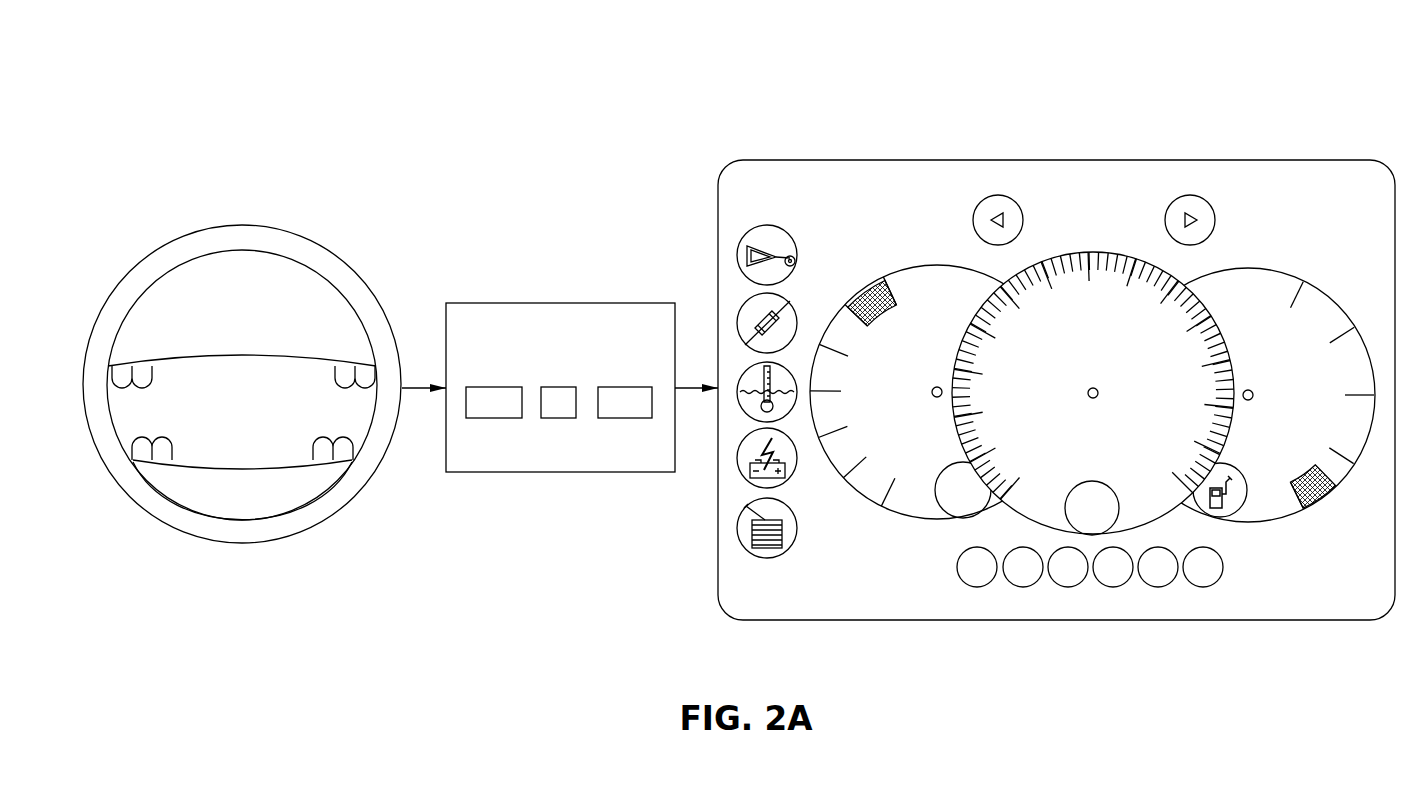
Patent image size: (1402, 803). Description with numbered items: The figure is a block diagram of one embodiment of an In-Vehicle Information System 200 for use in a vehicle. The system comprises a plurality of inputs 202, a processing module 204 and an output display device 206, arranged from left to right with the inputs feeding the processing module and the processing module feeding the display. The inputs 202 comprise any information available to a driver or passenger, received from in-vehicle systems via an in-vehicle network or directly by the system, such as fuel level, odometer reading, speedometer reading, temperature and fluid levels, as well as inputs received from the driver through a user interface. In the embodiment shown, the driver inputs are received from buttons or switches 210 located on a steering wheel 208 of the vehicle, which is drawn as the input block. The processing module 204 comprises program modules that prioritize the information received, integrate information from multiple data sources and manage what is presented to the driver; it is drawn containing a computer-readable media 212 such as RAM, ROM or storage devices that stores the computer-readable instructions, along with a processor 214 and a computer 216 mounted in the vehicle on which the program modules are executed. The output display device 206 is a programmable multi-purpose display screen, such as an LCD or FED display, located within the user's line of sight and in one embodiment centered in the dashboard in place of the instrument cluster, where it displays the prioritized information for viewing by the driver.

The In-Vehicle Information System 200 is at (895, 80).
The inputs 202 is at (262, 177).
The processing module 204 is at (565, 265).
The output display device 206 is at (1042, 632).
The steering wheel 208 is at (346, 262).
The buttons or switches 210 is at (142, 365).
The computer-readable media 212 is at (494, 387).
The processor 214 is at (558, 387).
The computer 216 is at (623, 387).